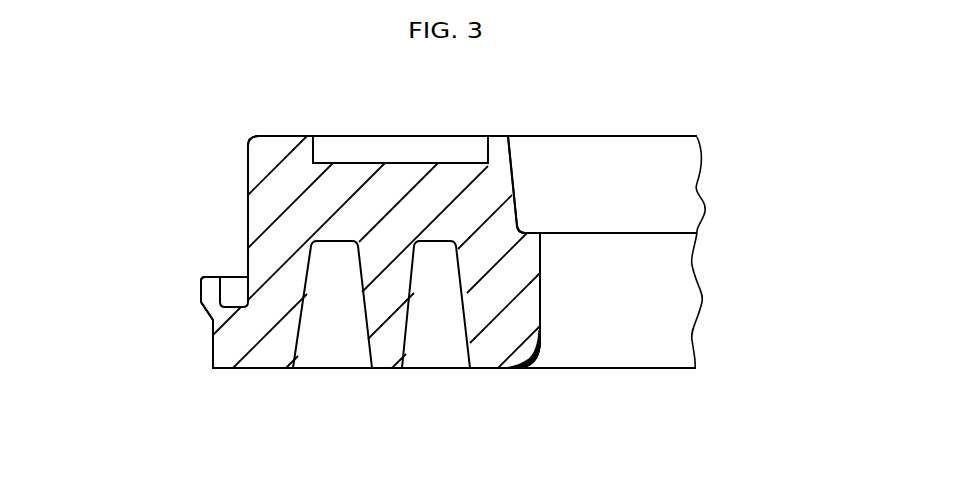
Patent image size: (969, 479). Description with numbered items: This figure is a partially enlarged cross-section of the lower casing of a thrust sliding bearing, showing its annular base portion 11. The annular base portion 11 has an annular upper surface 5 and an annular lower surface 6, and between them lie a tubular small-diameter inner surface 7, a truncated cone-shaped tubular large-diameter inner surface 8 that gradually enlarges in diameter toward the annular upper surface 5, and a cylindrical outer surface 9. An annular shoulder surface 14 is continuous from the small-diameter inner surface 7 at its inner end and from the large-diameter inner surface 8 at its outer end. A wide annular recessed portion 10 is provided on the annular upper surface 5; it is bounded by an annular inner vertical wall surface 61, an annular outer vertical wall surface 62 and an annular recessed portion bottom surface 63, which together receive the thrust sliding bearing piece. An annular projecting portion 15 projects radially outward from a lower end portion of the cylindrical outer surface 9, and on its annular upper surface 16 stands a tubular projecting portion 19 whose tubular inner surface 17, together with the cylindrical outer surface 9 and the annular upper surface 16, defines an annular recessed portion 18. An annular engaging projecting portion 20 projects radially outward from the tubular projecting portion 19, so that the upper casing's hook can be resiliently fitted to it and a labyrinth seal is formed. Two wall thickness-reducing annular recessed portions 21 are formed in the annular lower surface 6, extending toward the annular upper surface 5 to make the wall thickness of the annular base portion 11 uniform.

The annular upper surface 5 is at (615, 136).
The annular lower surface 6 is at (624, 368).
The tubular small-diameter inner surface 7 is at (542, 330).
The tubular large-diameter inner surface 8 is at (513, 175).
The cylindrical outer surface 9 is at (249, 166).
The wide annular recessed portion 10 is at (420, 148).
The annular base portion 11 is at (503, 338).
The annular shoulder surface 14 is at (528, 230).
The annular projecting portion 15 is at (227, 345).
The annular upper surface 16 is at (228, 287).
The tubular inner surface 17 is at (219, 292).
The annular recessed portion 18 is at (242, 290).
The tubular projecting portion 19 is at (212, 292).
The annular engaging projecting portion 20 is at (205, 298).
The wall thickness-reducing annular recessed portion 21 is at (328, 338).
The annular inner vertical wall surface 61 is at (488, 152).
The annular outer vertical wall surface 62 is at (313, 150).
The annular recessed portion bottom surface 63 is at (369, 162).